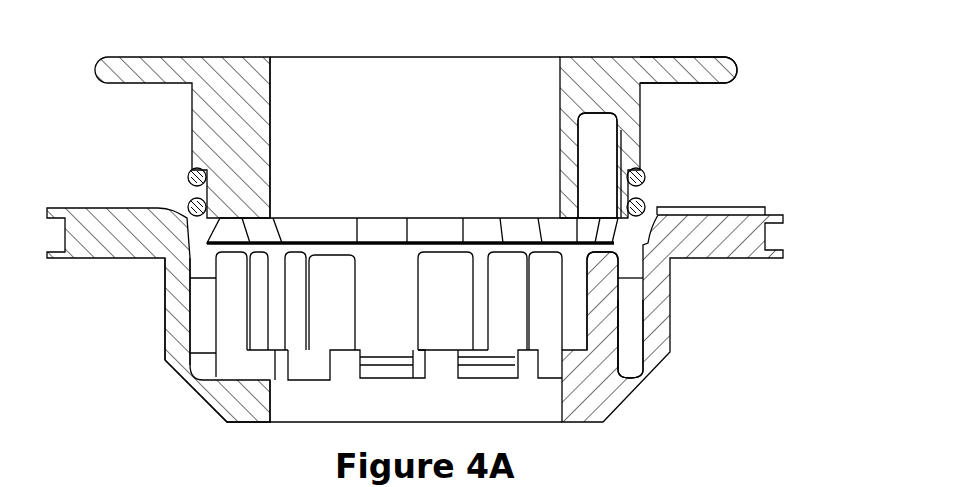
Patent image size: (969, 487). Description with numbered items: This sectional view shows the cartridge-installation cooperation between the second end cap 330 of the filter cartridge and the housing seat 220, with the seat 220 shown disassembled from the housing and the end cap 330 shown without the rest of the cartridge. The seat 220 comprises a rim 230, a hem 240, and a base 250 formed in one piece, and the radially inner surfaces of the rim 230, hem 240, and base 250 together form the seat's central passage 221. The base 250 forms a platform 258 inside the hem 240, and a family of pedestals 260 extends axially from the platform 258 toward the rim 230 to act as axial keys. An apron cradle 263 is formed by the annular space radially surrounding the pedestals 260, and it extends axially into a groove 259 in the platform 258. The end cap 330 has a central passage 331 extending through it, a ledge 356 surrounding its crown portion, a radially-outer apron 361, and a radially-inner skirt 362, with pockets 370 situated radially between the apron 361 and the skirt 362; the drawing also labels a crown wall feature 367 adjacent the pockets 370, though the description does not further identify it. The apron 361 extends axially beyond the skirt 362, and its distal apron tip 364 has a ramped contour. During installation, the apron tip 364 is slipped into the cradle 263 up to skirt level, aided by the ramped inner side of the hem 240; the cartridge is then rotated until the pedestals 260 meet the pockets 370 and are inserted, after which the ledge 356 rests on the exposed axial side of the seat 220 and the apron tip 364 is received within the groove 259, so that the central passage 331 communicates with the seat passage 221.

The second end cap 330 is at (448, 109).
The central passage 331 is at (375, 157).
The radially-outer apron 361 is at (192, 133).
The radially-inner skirt 362 is at (272, 127).
The right wall of upper housing 367 is at (577, 207).
The pocket 370 is at (598, 143).
The ledge 356 is at (690, 87).
The apron tip 364 is at (632, 243).
The rim 230 is at (147, 317).
The hem 240 is at (168, 322).
The base 250 is at (232, 405).
The platform 258 is at (240, 380).
The central passage 221 is at (389, 354).
The housing seat 220 is at (680, 319).
The pedestal 260 is at (602, 283).
The groove 259 is at (630, 370).
The apron cradle 263 is at (627, 303).